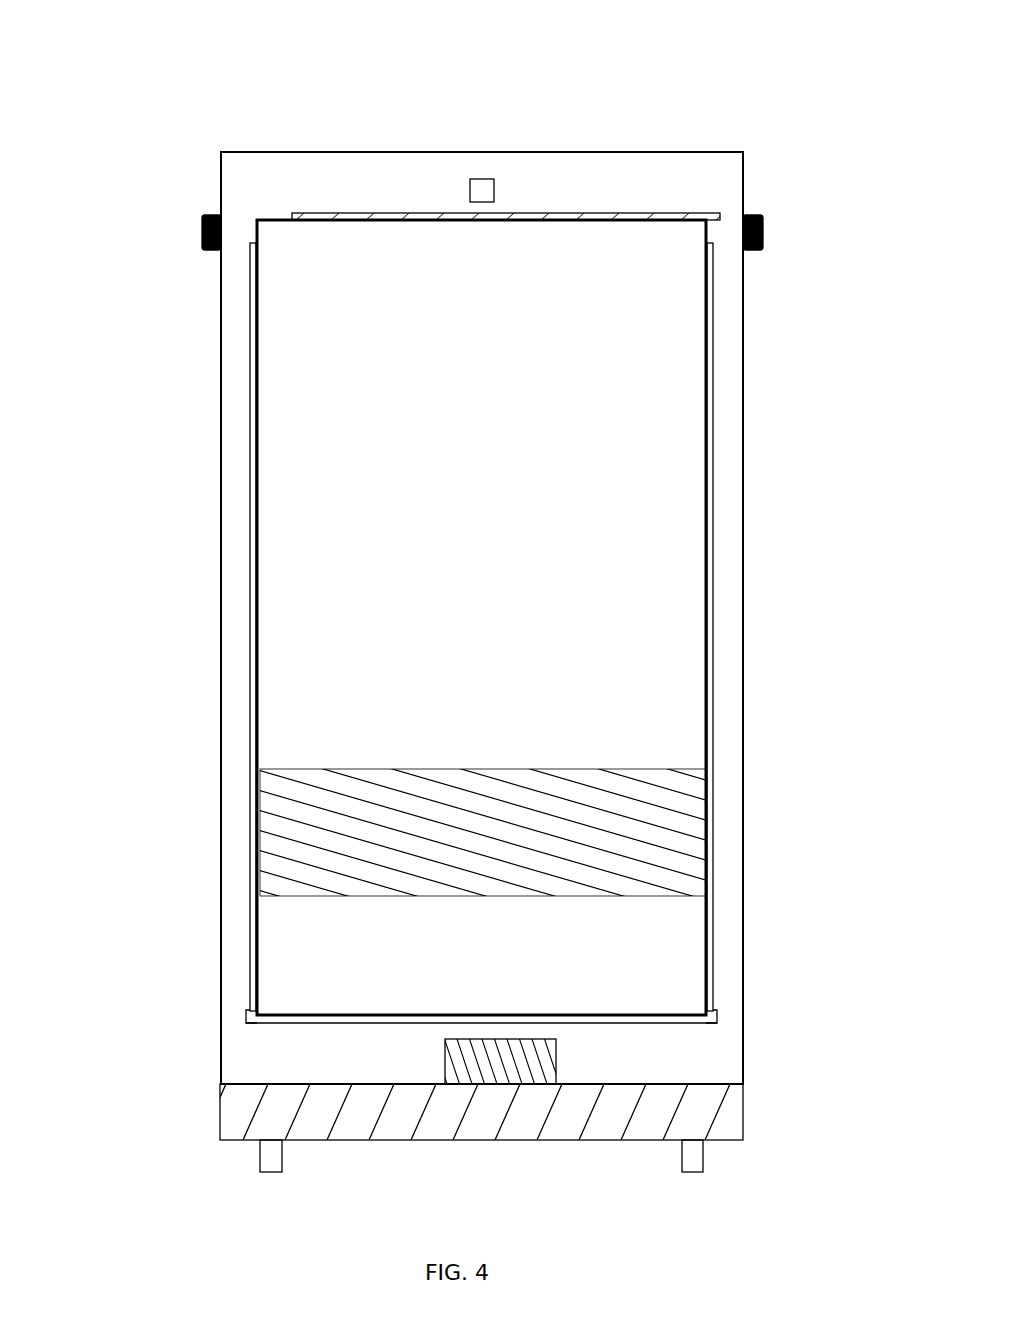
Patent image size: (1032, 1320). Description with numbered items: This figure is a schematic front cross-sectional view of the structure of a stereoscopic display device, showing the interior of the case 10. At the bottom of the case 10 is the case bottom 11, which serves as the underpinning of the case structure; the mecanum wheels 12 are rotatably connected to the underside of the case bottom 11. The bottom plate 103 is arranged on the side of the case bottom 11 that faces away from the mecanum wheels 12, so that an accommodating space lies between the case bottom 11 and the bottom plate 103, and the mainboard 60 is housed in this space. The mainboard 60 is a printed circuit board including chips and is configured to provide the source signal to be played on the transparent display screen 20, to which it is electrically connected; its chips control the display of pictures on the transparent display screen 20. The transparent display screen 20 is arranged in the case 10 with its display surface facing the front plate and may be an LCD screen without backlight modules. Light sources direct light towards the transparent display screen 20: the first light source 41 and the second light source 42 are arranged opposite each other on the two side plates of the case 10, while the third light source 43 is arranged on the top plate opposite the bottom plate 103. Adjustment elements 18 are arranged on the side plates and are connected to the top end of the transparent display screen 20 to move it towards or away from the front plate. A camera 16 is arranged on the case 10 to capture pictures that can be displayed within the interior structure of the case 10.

The case 10 is at (572, 175).
The case bottom 11 is at (724, 1115).
The mecanum wheels 12 is at (270, 1150).
The camera 16 is at (480, 190).
The adjustment elements 18 is at (765, 232).
The transparent display screen 20 is at (662, 838).
The first light source 41 is at (258, 490).
The second light source 42 is at (706, 500).
The third light source 43 is at (385, 217).
The mainboard 60 is at (488, 1045).
The bottom plate 103 is at (368, 1018).